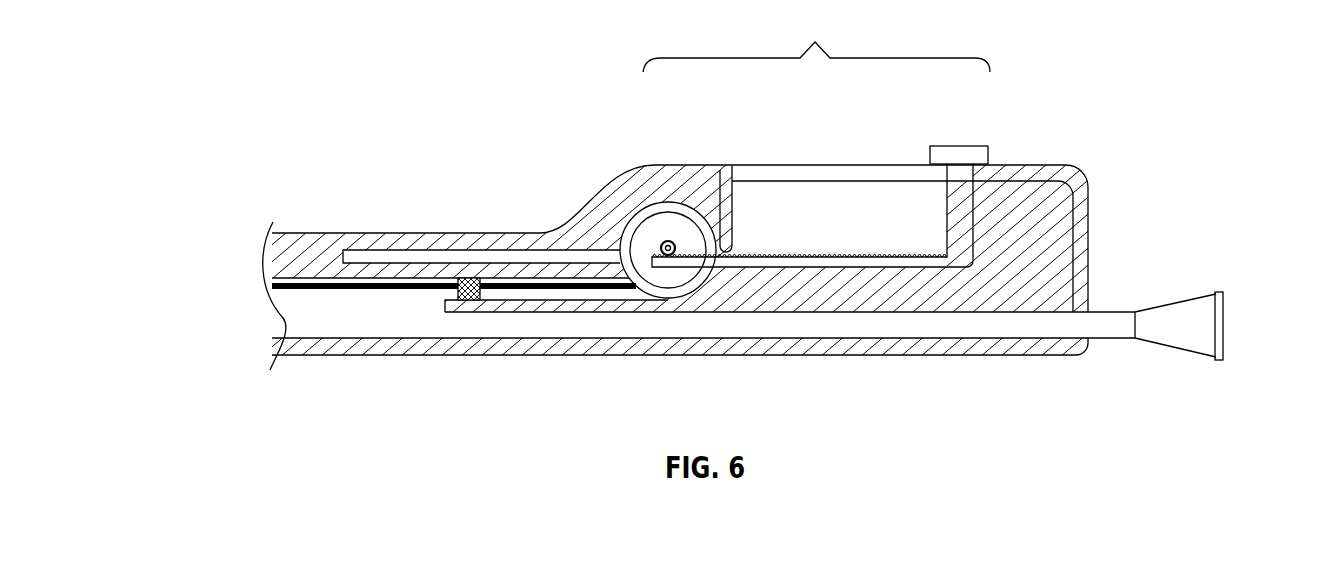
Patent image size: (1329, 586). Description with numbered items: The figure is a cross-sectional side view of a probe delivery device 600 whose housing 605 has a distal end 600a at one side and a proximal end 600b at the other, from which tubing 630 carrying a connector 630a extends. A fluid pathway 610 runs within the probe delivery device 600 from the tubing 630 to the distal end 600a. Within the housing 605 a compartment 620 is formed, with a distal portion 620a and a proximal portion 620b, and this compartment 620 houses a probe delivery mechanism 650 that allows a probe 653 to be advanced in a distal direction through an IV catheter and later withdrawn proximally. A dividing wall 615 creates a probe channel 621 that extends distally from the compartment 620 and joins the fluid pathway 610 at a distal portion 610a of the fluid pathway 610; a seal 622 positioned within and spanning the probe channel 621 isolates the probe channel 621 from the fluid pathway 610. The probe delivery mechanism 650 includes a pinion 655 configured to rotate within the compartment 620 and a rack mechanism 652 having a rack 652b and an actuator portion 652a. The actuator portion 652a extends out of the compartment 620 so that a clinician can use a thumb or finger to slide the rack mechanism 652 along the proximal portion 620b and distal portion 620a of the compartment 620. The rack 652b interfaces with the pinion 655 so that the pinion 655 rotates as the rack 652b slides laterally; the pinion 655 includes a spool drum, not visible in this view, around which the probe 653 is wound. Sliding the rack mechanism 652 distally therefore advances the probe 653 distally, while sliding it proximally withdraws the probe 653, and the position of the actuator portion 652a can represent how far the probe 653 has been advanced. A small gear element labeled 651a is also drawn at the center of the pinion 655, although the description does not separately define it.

The probe delivery device 600 is at (1163, 71).
The distal end 600a is at (289, 381).
The proximal end 600b is at (1053, 369).
The housing 605 is at (1037, 357).
The fluid pathway 610 is at (598, 322).
The distal portion of fluid pathway 610a is at (309, 309).
The dividing wall 615 is at (457, 303).
The compartment 620 is at (665, 200).
The distal portion of compartment 620a is at (413, 260).
The proximal portion of compartment 620b is at (880, 214).
The probe channel 621 is at (537, 295).
The seal 622 is at (468, 278).
The tubing 630 is at (1105, 330).
The connector 630a is at (1193, 272).
The probe delivery mechanism 650 is at (816, 139).
The pinion gear 651a is at (670, 240).
The rack mechanism 652 is at (1013, 137).
The actuator portion 652a is at (960, 146).
The rack 652b is at (847, 255).
The probe 653 is at (322, 279).
The pinion 655 is at (646, 214).